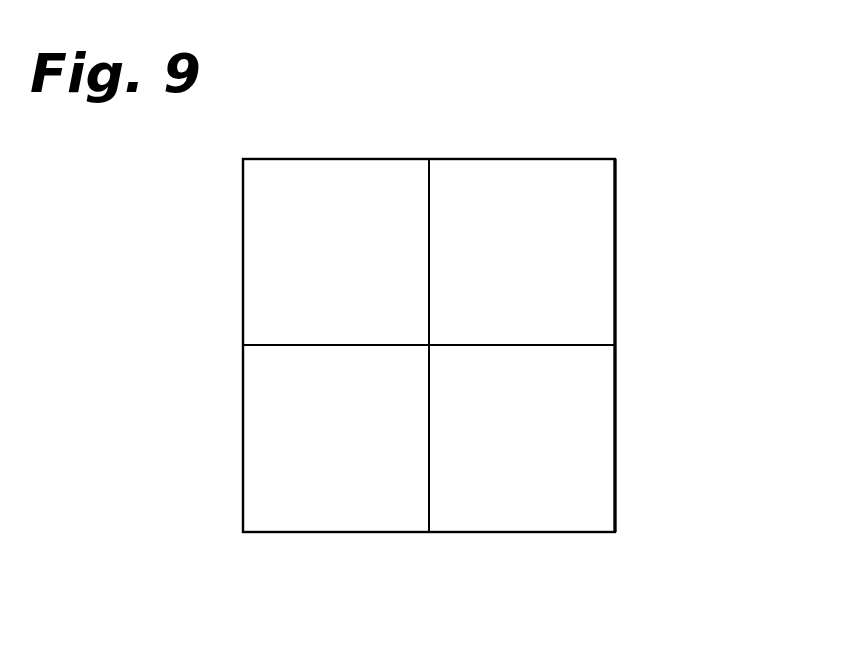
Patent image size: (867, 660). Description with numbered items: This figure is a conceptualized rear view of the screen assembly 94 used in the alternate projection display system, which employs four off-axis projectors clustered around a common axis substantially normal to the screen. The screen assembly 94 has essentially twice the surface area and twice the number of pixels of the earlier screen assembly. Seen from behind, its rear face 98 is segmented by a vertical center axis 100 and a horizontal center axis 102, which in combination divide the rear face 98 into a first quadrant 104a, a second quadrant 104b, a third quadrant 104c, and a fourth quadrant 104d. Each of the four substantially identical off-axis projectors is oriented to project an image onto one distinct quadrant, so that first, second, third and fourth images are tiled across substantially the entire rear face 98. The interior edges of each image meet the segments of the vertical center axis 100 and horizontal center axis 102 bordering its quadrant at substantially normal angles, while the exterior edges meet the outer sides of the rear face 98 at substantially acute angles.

The screen assembly 94 is at (615, 205).
The rear face 98 is at (590, 277).
The vertical center axis 100 is at (430, 230).
The horizontal center axis 102 is at (497, 348).
The first quadrant 104a is at (377, 267).
The second quadrant 104b is at (562, 268).
The third quadrant 104c is at (372, 456).
The fourth quadrant 104d is at (560, 456).